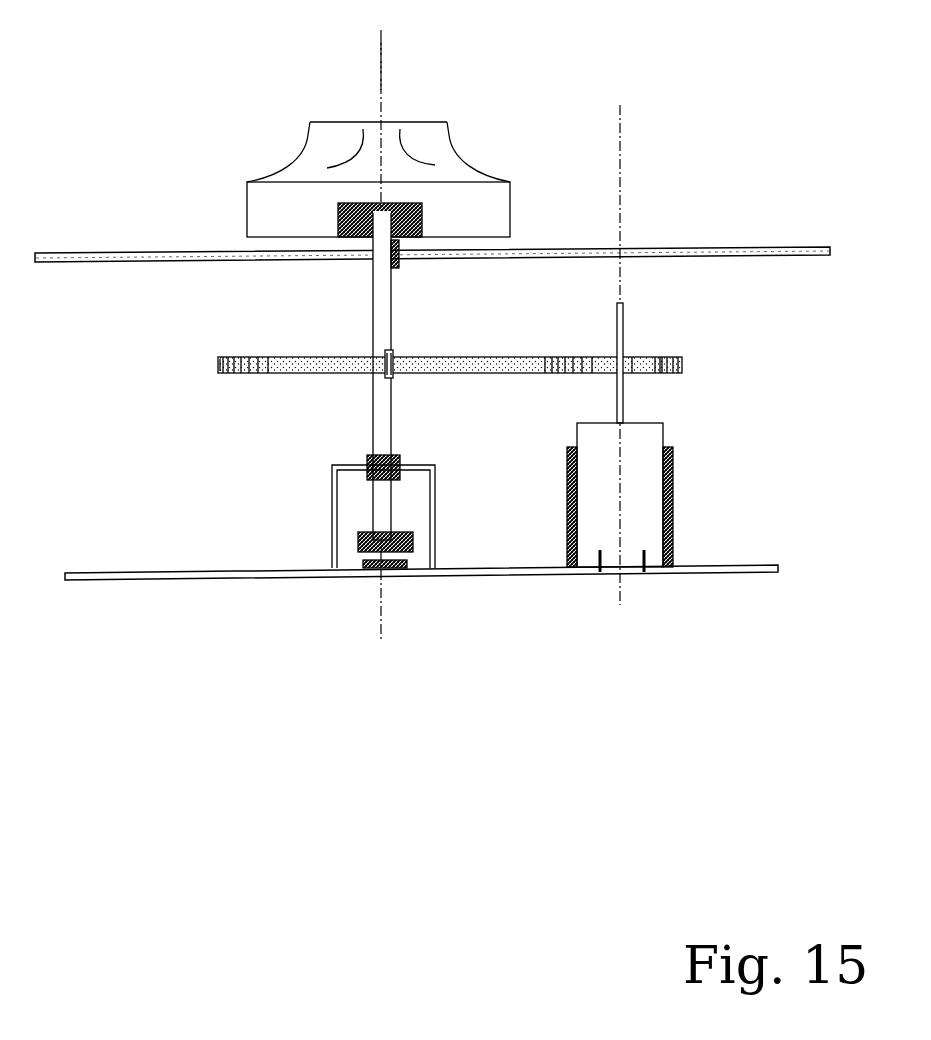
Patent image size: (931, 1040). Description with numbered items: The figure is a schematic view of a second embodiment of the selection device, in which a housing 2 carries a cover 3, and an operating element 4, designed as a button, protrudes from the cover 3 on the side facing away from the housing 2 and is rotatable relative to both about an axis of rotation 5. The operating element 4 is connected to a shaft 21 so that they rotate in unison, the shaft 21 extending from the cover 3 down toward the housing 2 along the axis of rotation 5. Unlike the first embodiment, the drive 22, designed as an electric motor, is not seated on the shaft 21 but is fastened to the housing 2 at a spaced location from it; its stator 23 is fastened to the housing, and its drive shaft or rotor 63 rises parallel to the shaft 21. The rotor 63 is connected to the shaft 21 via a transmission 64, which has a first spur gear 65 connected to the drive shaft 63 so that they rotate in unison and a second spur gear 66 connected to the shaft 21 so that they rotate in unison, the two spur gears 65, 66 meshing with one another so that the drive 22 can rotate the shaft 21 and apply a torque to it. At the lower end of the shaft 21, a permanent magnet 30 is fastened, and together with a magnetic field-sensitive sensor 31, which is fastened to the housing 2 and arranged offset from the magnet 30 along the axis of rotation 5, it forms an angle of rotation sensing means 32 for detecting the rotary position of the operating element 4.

The housing 2 is at (105, 578).
The cover 3 is at (672, 248).
The operating element 4 is at (310, 140).
The axis of rotation 5 is at (381, 72).
The shaft 21 is at (375, 305).
The drive 22 is at (602, 447).
The stator 23 is at (673, 522).
The permanent magnet 30 is at (358, 548).
The magnetic field-sensitive sensor 31 is at (386, 569).
The angle of rotation sensing means 32 is at (436, 540).
The drive shaft 63 is at (623, 395).
The transmission 64 is at (452, 343).
The first spur gear 65 is at (661, 358).
The second spur gear 66 is at (272, 372).